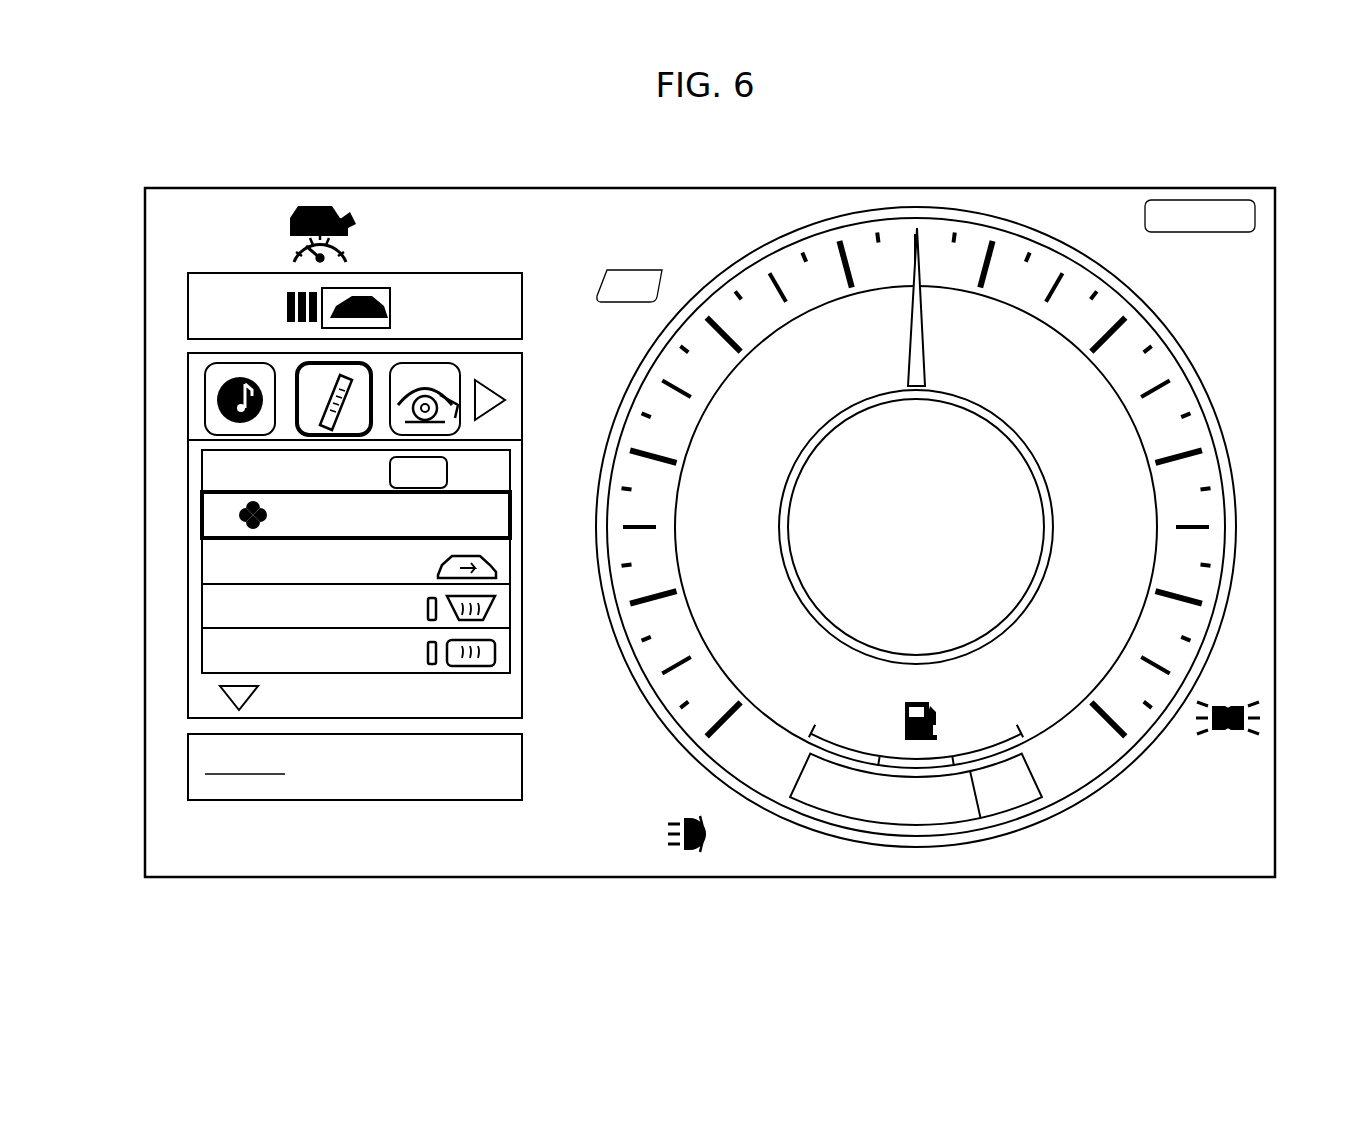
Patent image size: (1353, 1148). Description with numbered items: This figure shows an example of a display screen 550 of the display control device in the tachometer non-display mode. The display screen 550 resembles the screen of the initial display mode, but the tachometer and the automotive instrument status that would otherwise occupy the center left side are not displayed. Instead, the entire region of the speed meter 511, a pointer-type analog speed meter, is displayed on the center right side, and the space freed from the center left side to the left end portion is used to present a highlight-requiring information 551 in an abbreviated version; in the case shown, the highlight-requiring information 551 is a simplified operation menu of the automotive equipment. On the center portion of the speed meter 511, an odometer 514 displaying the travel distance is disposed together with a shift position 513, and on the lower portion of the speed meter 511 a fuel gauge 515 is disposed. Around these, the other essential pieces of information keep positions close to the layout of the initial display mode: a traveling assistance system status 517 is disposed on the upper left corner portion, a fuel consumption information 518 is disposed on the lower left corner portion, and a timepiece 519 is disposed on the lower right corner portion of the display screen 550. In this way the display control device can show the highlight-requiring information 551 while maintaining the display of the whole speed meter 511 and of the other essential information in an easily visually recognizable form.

The display screen 550 is at (1093, 188).
The traveling assistance system status 517 is at (496, 273).
The highlight-requiring information 551 is at (196, 513).
The fuel consumption information 518 is at (342, 788).
The speed meter 511 is at (969, 527).
The shift position 513 is at (984, 492).
The odometer 514 is at (985, 583).
The fuel gauge 515 is at (923, 818).
The timepiece 519 is at (1220, 863).